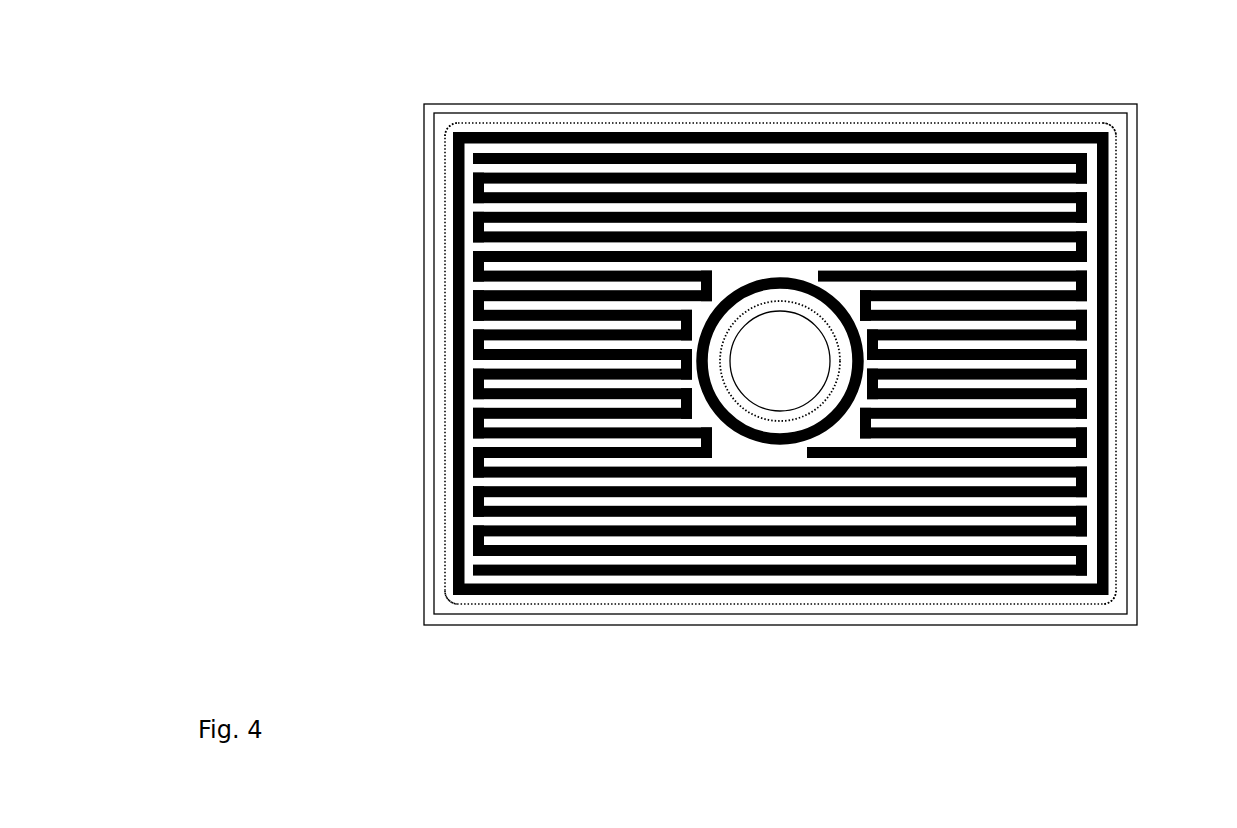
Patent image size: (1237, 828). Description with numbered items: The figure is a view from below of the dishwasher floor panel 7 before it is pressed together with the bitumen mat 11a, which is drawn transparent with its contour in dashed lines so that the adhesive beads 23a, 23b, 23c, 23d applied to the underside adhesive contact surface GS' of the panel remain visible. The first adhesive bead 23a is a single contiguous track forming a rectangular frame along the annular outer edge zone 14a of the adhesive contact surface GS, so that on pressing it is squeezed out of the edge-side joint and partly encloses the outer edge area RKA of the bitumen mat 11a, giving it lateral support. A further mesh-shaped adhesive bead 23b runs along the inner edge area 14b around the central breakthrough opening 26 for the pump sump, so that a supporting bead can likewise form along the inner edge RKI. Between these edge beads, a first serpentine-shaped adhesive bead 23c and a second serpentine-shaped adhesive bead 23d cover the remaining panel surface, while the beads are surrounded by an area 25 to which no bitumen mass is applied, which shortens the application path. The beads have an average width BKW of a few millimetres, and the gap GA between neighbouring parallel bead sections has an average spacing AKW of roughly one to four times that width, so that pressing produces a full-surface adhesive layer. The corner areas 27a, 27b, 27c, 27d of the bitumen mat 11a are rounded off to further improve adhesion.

The floor panel 7 is at (424, 509).
The bitumen mat 11a is at (1117, 284).
The outer edge area 14a is at (1110, 513).
The inner edge area 14b is at (790, 292).
The first adhesive bead 23a is at (605, 135).
The further mesh-shaped adhesive bead 23b is at (768, 450).
The first serpentine-shaped adhesive bead 23c is at (922, 156).
The second serpentine-shaped adhesive bead 23d is at (1080, 411).
The area to which the bitumen mass is not applied 25 is at (470, 442).
The breakthrough opening 26 is at (823, 382).
The corner area 27a is at (452, 124).
The corner area 27b is at (1118, 124).
The corner area 27c is at (448, 601).
The corner area 27d is at (1125, 606).
The width of the adhesive beads BKW is at (475, 163).
The average spacing of the gap AKW is at (475, 251).
The gap GA is at (500, 243).
The outer edge area of the bitumen mat RKA is at (1117, 180).
The inner edge of the bitumen mat RKI is at (798, 406).
The adhesive contact surface GS is at (944, 568).